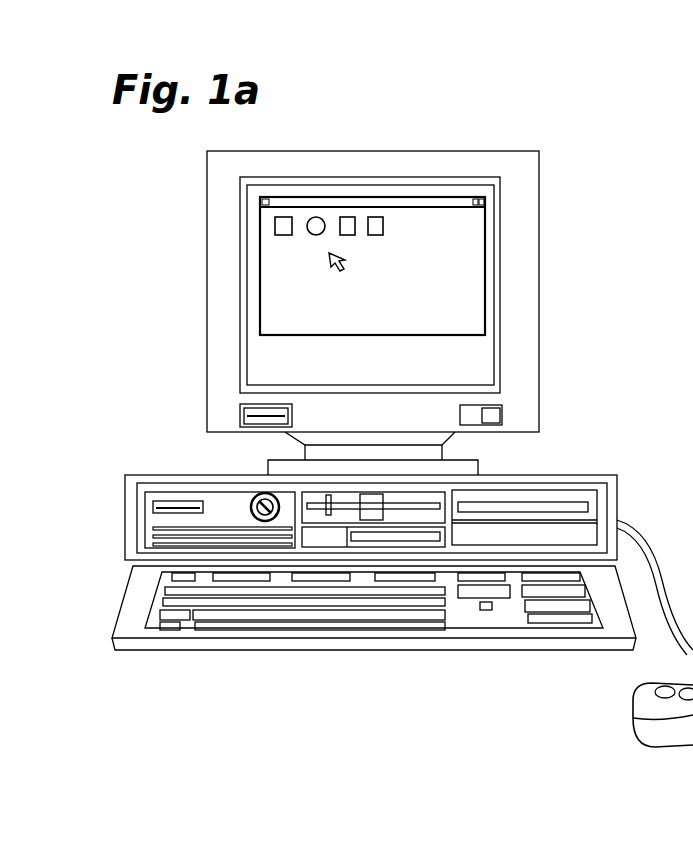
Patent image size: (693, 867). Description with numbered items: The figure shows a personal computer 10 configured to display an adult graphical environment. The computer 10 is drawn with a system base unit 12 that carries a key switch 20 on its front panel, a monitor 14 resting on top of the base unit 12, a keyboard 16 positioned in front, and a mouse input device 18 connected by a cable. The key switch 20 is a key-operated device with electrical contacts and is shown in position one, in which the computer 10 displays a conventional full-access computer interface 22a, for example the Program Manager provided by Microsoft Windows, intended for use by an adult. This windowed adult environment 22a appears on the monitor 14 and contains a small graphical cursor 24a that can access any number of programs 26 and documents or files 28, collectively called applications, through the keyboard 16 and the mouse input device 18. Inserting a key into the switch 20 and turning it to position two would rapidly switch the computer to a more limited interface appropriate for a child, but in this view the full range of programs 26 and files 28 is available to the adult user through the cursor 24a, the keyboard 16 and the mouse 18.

The personal computer 10 is at (168, 225).
The computer base unit 12 is at (122, 505).
The monitor 14 is at (543, 314).
The keyboard 16 is at (210, 658).
The mouse input device 18 is at (655, 713).
The key switch 20 is at (247, 480).
The full-access computer interface 22a is at (278, 297).
The graphical cursor 24a is at (346, 261).
The programs 26 is at (342, 217).
The documents or files 28 is at (313, 217).